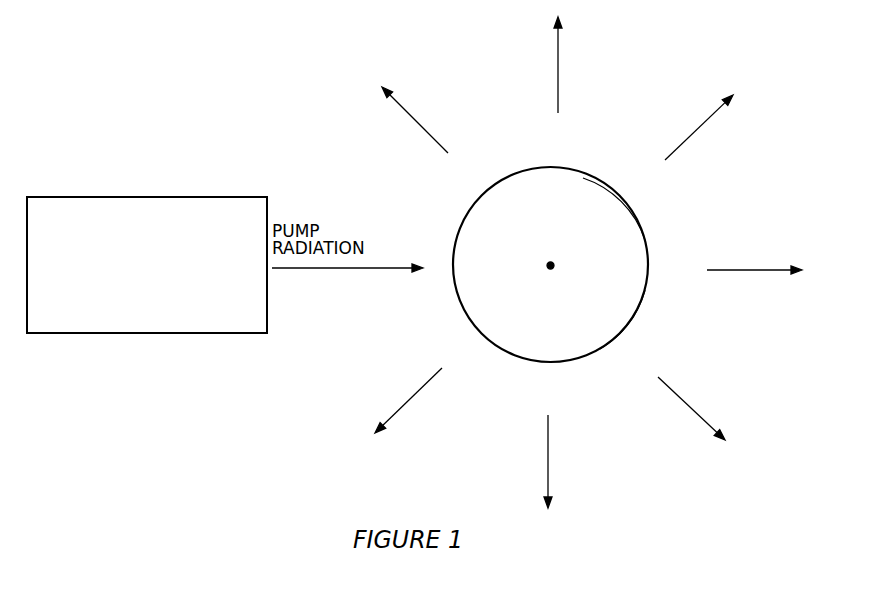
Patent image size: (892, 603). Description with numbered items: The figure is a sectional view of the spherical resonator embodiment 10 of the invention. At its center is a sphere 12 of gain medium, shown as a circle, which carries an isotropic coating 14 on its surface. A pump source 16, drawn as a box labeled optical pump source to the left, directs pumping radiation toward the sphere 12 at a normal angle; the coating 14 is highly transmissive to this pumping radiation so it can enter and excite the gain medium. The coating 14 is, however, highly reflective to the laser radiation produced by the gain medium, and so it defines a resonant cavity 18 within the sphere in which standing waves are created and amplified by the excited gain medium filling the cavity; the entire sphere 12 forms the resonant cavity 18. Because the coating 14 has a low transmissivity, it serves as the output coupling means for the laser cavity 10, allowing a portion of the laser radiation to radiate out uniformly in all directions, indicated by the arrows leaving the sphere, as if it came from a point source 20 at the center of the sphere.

The spherical resonator embodiment 10 is at (677, 58).
The sphere 12 is at (546, 222).
The isotropic coating 14 is at (638, 212).
The pump source 16 is at (132, 306).
The resonant cavity 18 is at (642, 285).
The point source 20 is at (554, 270).